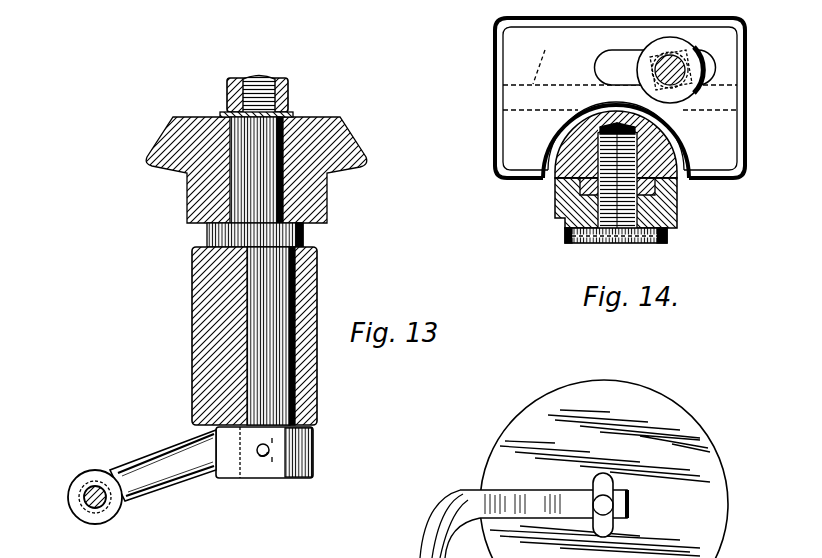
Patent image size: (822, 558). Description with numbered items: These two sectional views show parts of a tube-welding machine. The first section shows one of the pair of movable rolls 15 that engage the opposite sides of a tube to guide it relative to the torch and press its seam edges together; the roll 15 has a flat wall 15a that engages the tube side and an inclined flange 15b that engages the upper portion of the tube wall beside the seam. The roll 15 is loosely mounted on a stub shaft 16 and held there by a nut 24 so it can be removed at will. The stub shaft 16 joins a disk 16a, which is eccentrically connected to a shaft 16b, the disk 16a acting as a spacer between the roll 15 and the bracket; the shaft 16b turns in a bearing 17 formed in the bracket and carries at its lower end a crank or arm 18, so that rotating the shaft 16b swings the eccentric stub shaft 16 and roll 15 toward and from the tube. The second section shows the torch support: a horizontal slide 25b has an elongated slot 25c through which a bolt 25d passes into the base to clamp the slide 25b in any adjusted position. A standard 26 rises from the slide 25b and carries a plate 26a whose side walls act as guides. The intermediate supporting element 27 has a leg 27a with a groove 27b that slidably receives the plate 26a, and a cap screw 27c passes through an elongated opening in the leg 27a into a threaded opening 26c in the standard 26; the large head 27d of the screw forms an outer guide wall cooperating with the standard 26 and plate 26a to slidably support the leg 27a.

In FIG. 13, the movable roll 15 is at (263, 170).
In FIG. 13, the flat wall 15a is at (186, 199).
In FIG. 13, the inclined wall or flange 15b is at (150, 158).
In FIG. 13, the stub shaft 16 is at (270, 141).
In FIG. 13, the disk 16a is at (304, 240).
In FIG. 13, the shaft 16b is at (255, 326).
In FIG. 13, the bearing 17 is at (296, 388).
In FIG. 13, the crank or arm 18 is at (158, 456).
In FIG. 13, the nut 24 is at (290, 95).
In FIG. 14, the slide 25b is at (503, 50).
In FIG. 14, the elongated slot 25c is at (596, 68).
In FIG. 14, the bolt 25d is at (665, 56).
In FIG. 14, the standard or upright member 26 is at (562, 148).
In FIG. 14, the plate 26a is at (555, 187).
In FIG. 14, the screw threaded opening 26c is at (597, 164).
In FIG. 14, the intermediate supporting element 27 is at (680, 207).
In FIG. 14, the leg 27a is at (555, 214).
In FIG. 14, the groove 27b is at (680, 191).
In FIG. 14, the bolt or cap screw 27c is at (609, 216).
In FIG. 14, the head of the screw 27d is at (662, 246).